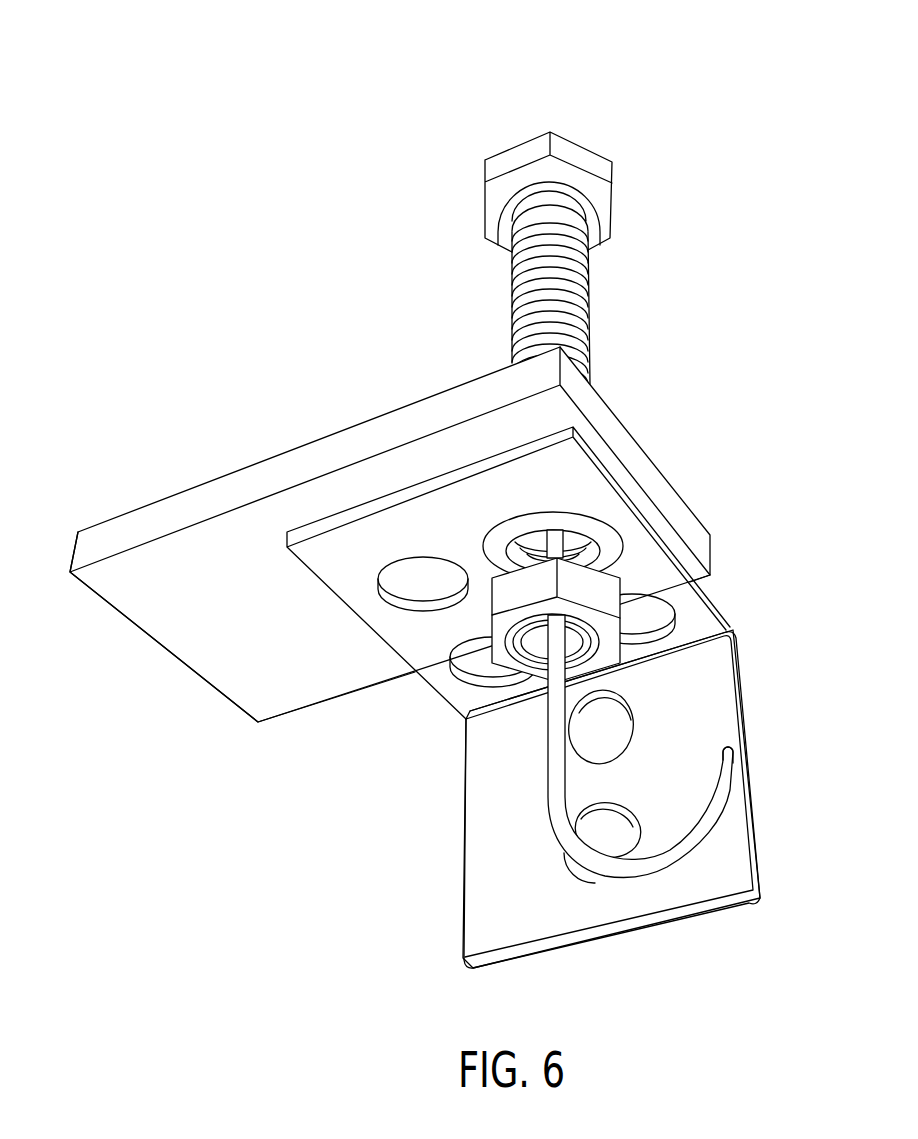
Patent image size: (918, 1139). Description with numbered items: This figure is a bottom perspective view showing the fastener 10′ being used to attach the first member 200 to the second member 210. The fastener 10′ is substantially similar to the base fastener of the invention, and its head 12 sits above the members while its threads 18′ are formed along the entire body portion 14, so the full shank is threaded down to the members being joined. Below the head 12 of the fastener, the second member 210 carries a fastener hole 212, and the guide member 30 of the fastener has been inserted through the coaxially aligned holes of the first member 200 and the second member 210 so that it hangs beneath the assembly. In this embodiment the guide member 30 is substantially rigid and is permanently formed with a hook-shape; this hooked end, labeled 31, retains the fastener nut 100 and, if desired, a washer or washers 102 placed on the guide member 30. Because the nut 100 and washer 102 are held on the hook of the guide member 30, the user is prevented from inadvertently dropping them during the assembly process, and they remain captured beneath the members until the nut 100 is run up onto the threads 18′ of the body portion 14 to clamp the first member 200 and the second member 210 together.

The fastener 10′ is at (466, 82).
The bolt 12 is at (606, 141).
The body portion 14 is at (567, 273).
The threads 18′ is at (590, 292).
The first member 200 is at (177, 493).
The second member 210 is at (742, 655).
The fastener hole 212 is at (575, 533).
The washer 102 is at (610, 543).
The fastener nut 100 is at (600, 590).
The guide member 30 is at (545, 751).
The hook end 31 is at (653, 873).